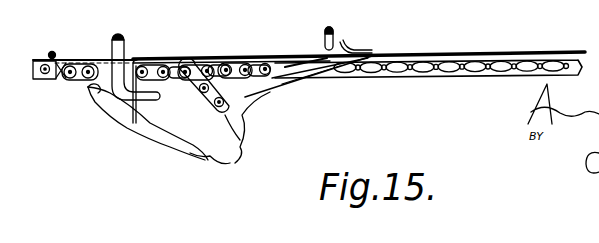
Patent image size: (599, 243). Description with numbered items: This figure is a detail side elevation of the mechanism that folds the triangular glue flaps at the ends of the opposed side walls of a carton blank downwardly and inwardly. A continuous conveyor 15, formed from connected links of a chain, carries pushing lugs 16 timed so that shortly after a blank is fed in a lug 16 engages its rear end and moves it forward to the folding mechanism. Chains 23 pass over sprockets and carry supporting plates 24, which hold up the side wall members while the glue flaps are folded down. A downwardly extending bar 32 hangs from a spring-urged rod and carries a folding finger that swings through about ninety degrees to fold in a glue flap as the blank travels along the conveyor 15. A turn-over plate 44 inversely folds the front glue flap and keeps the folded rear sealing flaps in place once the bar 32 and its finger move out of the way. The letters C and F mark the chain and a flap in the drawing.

The continuous conveyor 15 is at (50, 78).
The pushing lug 16 is at (55, 52).
The chain 23 is at (199, 93).
The supporting plate 24 is at (161, 82).
The downwardly extending bar 32 is at (123, 45).
The turn-over plate 44 is at (281, 110).
The chain guide bar C is at (232, 57).
The fabric flap F is at (176, 112).